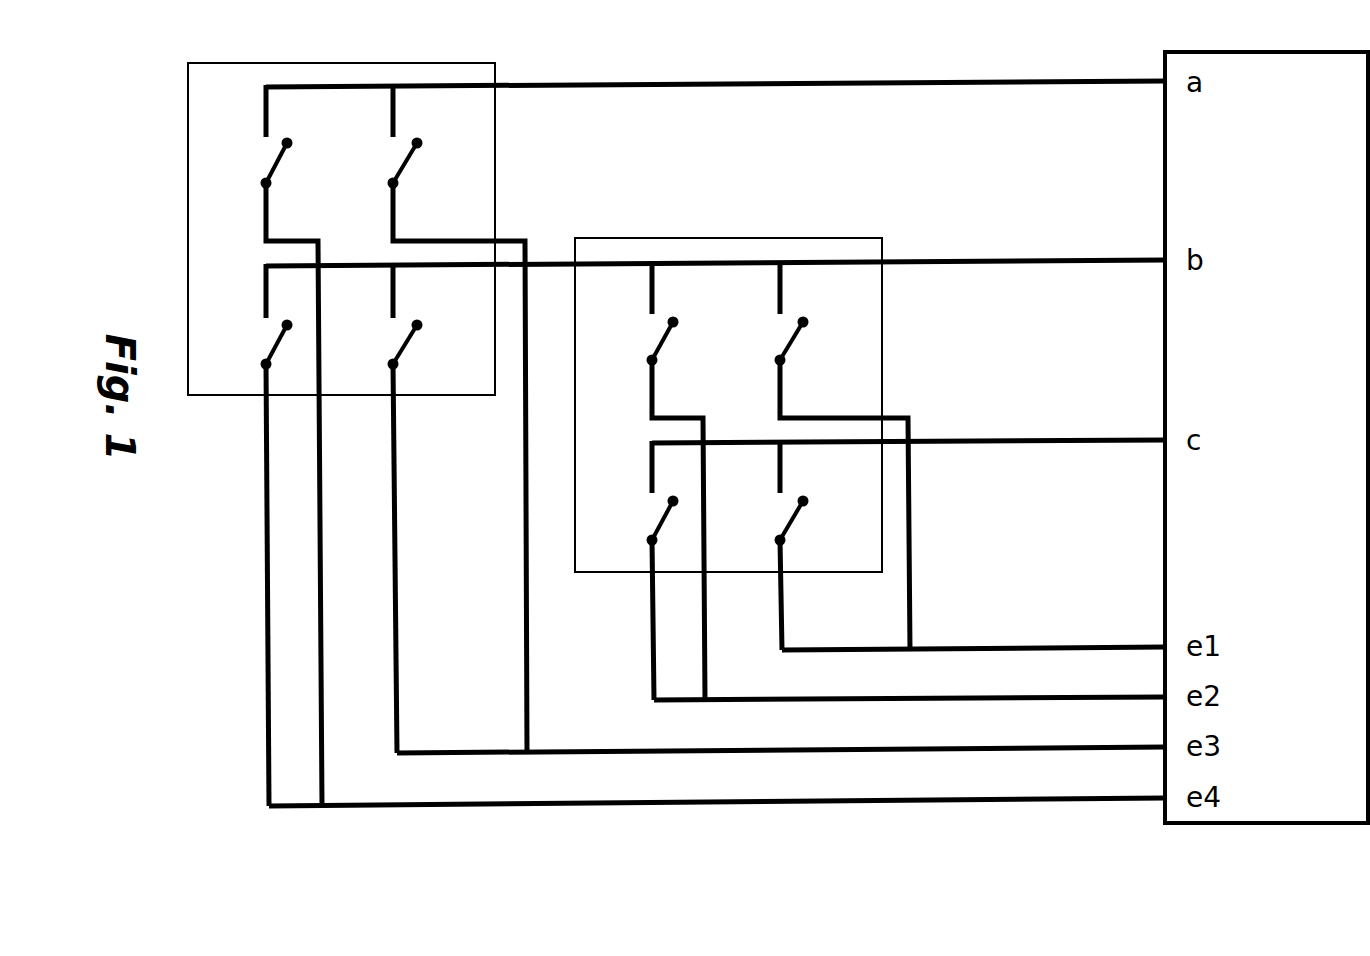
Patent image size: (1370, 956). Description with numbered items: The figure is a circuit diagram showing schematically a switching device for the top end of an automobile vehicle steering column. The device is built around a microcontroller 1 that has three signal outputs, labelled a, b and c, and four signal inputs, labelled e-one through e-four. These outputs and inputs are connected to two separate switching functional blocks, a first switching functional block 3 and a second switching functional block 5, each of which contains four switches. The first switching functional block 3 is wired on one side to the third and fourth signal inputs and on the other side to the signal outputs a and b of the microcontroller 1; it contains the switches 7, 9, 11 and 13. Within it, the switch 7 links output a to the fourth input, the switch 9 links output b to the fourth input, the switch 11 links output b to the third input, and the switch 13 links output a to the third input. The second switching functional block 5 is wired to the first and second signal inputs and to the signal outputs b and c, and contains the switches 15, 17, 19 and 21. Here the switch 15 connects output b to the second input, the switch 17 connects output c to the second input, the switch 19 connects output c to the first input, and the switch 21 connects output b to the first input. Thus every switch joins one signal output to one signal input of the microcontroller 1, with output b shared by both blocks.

The microcontroller 1 is at (1266, 437).
The first switching functional block 3 is at (497, 197).
The second switching functional block 5 is at (884, 375).
The switch 7 is at (273, 445).
The switch 9 is at (258, 535).
The switch 11 is at (427, 508).
The switch 13 is at (458, 419).
The switch 15 is at (653, 481).
The switch 17 is at (640, 570).
The switch 19 is at (815, 545).
The switch 21 is at (843, 456).